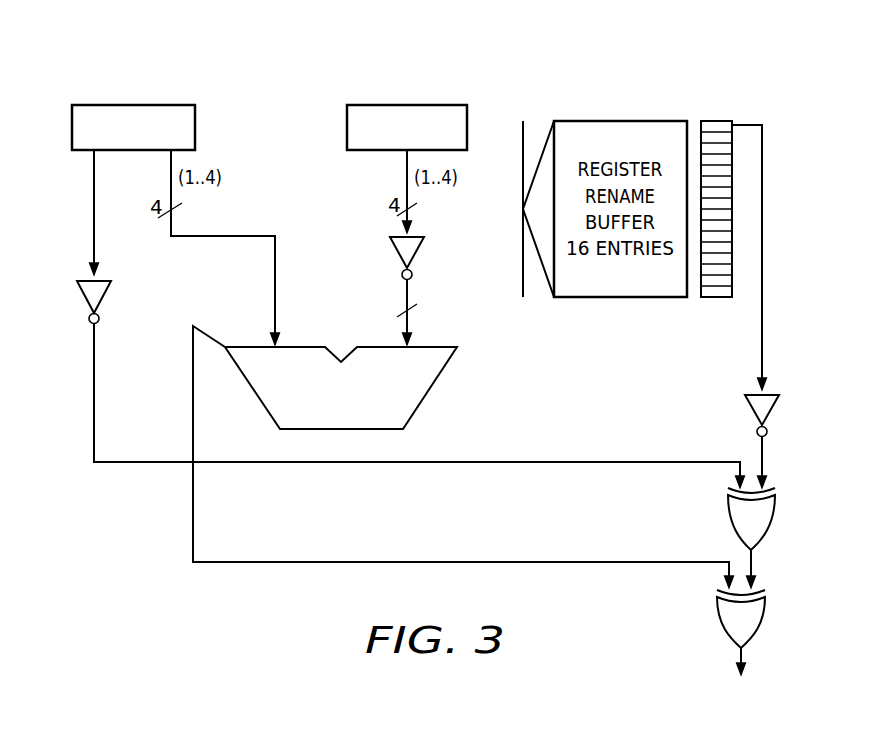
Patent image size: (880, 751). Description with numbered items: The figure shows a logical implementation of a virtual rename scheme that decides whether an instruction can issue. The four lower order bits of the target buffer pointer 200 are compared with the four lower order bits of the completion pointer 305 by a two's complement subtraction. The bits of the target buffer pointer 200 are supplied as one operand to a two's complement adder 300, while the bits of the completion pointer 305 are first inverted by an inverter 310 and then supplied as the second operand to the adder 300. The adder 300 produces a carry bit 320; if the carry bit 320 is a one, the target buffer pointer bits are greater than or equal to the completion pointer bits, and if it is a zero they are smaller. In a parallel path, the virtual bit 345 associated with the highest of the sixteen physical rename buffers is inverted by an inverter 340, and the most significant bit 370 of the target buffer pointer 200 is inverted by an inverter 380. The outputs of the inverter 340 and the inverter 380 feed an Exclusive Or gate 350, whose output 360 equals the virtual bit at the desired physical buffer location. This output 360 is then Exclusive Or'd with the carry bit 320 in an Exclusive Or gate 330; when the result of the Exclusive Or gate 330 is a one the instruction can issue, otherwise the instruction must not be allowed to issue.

The target buffer pointer 200 is at (132, 104).
The completion pointer 305 is at (408, 104).
The most significant bit 370 is at (94, 213).
The inverter 380 is at (83, 299).
The inverter 310 is at (418, 255).
The two's complement adder 300 is at (432, 388).
The carry bit 320 is at (193, 505).
The virtual bit 345 is at (762, 210).
The inverter 340 is at (774, 412).
The Exclusive Or gate 350 is at (777, 512).
The output 360 is at (755, 565).
The Exclusive Or gate 330 is at (768, 612).